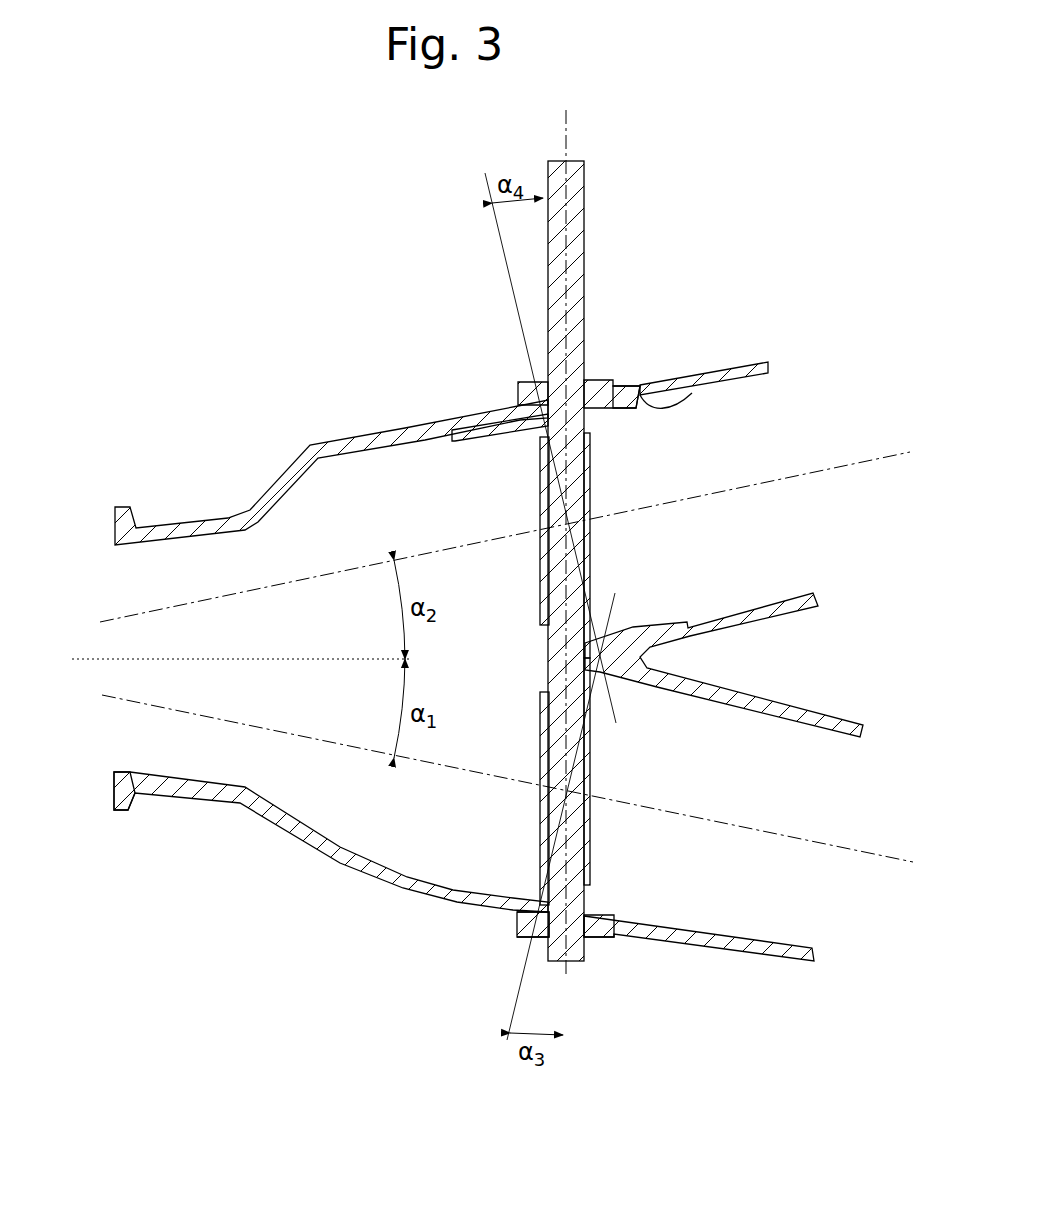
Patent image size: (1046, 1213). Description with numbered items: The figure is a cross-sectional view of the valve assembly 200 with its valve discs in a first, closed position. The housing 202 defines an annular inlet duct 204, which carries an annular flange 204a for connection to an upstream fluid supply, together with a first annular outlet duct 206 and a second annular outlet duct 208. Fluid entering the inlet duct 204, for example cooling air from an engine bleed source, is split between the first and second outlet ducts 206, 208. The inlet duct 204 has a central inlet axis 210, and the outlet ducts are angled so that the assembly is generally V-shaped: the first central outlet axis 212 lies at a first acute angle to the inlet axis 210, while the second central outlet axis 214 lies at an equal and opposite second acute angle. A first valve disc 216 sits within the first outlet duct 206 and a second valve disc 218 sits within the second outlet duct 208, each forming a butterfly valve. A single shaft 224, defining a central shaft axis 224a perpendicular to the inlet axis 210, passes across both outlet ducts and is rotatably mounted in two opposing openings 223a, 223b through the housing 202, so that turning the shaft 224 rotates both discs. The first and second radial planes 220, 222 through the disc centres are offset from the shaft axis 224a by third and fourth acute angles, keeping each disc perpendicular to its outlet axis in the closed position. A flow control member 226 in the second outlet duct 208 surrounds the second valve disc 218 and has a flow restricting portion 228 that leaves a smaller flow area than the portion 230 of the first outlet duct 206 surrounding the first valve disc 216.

The valve assembly 200 is at (212, 256).
The housing 202 is at (280, 498).
The annular inlet duct 204 is at (200, 765).
The annular flange 204a is at (113, 797).
The first annular outlet duct 206 is at (762, 922).
The second annular outlet duct 208 is at (758, 418).
The central inlet axis 210 is at (78, 659).
The first central outlet axis 212 is at (905, 862).
The second central outlet axis 214 is at (902, 455).
The first valve disc 216 is at (537, 865).
The second valve disc 218 is at (485, 416).
The first radial plane 220 is at (573, 770).
The second radial plane 222 is at (575, 545).
The opening 223a is at (587, 945).
The opening 223b is at (587, 380).
The shaft 224 is at (580, 202).
The central shaft axis 224a is at (567, 124).
The flow control member 226 is at (620, 390).
The flow restricting portion 228 is at (665, 400).
The portion of the first outlet duct 230 is at (523, 893).